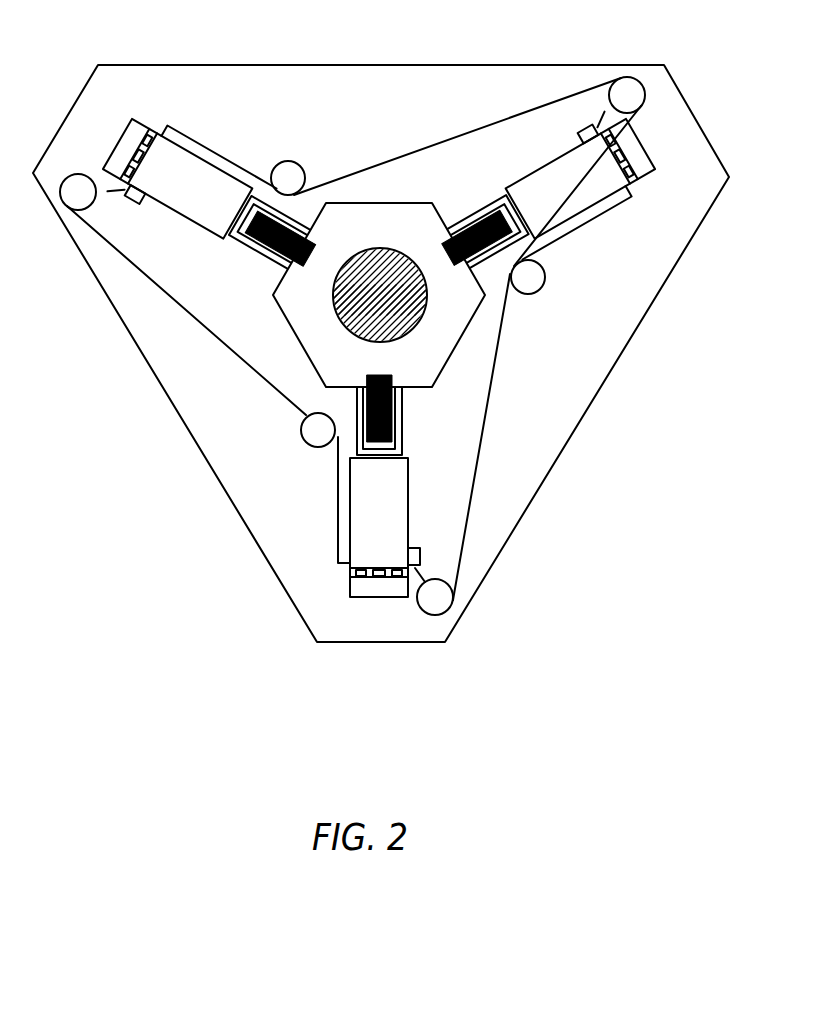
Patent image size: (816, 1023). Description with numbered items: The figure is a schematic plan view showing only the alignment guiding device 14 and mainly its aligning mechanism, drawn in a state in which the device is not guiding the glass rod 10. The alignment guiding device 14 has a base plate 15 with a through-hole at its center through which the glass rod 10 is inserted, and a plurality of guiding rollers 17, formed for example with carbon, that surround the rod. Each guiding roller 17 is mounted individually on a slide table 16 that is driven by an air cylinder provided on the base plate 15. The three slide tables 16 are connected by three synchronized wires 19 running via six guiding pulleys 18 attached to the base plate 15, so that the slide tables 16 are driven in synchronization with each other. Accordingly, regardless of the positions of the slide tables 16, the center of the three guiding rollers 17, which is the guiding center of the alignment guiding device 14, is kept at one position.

The glass rod 10 is at (390, 250).
The alignment guiding device 14 is at (66, 40).
The base plate 15 is at (187, 430).
The slide table 16 is at (403, 516).
The guiding roller 17 is at (398, 377).
The guiding pulley 18 is at (304, 437).
The synchronized wire 19 is at (212, 328).